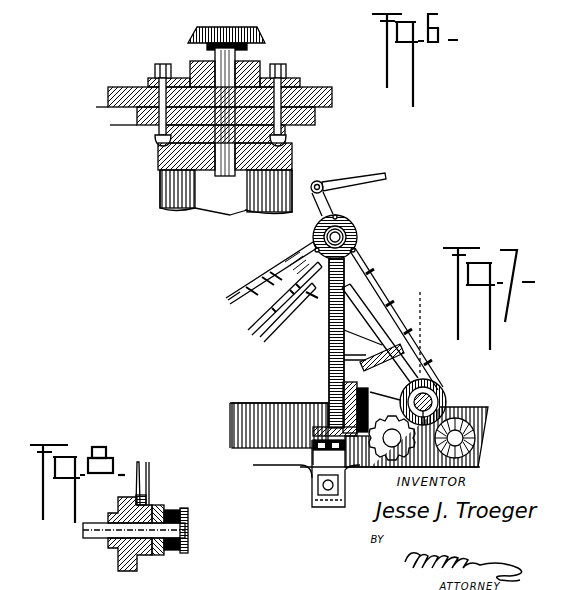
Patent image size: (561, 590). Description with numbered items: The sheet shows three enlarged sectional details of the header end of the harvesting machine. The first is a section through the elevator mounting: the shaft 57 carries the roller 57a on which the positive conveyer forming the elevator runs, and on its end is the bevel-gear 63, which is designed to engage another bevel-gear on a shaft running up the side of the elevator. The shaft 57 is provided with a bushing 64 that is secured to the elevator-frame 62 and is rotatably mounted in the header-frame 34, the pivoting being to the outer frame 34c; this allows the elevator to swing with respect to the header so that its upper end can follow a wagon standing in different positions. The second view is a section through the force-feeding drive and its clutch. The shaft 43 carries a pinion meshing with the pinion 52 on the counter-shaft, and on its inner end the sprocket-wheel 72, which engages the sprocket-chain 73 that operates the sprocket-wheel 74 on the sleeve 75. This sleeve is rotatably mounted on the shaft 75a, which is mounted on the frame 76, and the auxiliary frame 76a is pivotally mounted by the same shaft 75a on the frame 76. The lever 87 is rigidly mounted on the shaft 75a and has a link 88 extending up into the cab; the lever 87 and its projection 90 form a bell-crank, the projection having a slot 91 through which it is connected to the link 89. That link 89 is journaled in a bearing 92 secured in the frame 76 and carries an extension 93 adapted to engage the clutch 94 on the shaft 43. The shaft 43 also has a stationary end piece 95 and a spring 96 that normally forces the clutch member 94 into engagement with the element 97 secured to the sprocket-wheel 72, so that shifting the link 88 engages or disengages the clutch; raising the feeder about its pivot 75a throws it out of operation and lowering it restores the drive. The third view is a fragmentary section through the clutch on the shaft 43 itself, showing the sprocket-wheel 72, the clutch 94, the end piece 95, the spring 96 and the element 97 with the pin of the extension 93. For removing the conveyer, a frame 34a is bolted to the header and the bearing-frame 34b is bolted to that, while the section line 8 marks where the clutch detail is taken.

In FIG. 7, the machine frame / axis line 8 is at (418, 325).
In FIG. 7, the header-frame 34 is at (343, 398).
In FIG. 7, the frame 34a is at (312, 498).
In FIG. 7, the bearing-frame 34b is at (280, 418).
In FIG. 6, the outer frame 34c is at (311, 91).
In FIG. 7, the shaft 43 is at (438, 396).
In FIG. 8, the shaft 43 is at (96, 537).
In FIG. 7, the pinion 52 is at (385, 399).
In FIG. 6, the shaft 57 is at (212, 60).
In FIG. 6, the roller 57a is at (293, 185).
In FIG. 6, the elevator-frame 62 is at (125, 127).
In FIG. 6, the bevel-gear 63 is at (250, 32).
In FIG. 7, the bevel-gear 63 is at (470, 420).
In FIG. 6, the bushing 64 is at (190, 68).
In FIG. 7, the sprocket-wheel 72 is at (438, 382).
In FIG. 8, the sprocket-wheel 72 is at (114, 500).
In FIG. 7, the sprocket-chain 73 is at (238, 291).
In FIG. 7, the sprocket-wheel 74 is at (357, 223).
In FIG. 7, the sleeve 75 is at (345, 232).
In FIG. 7, the shaft 75a is at (300, 248).
In FIG. 7, the frame 76 is at (345, 282).
In FIG. 7, the auxiliary frame 76a is at (256, 316).
In FIG. 7, the lever 87 is at (324, 198).
In FIG. 7, the link 88 is at (374, 173).
In FIG. 7, the link 89 is at (329, 336).
In FIG. 7, the projection 90 is at (285, 293).
In FIG. 7, the slot 91 is at (312, 292).
In FIG. 7, the bearing 92 is at (383, 346).
In FIG. 7, the extension 93 is at (410, 375).
In FIG. 8, the extension 93 is at (152, 482).
In FIG. 8, the clutch 94 is at (165, 510).
In FIG. 8, the stationary end piece 95 is at (190, 530).
In FIG. 8, the spring 96 is at (180, 514).
In FIG. 8, the element 97 is at (140, 471).